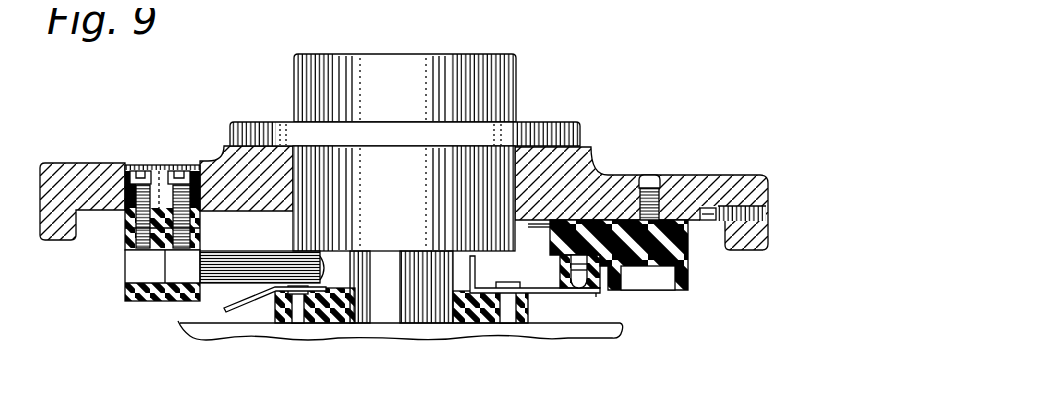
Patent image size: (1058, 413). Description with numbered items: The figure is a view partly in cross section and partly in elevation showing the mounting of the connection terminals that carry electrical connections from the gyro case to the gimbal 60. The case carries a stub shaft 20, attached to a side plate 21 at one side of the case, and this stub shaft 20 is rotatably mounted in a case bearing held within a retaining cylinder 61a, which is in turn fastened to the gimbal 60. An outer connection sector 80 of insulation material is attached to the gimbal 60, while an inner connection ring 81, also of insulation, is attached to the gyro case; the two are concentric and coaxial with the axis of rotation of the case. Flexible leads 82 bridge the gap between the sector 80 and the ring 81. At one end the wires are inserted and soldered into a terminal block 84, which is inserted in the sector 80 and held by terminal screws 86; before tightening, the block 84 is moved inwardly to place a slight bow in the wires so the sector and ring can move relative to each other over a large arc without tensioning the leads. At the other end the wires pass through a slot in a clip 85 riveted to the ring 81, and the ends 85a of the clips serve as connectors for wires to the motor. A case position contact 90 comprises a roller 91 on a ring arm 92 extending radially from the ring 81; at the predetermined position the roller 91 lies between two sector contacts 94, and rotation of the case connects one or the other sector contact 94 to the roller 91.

The retaining cylinder 61a is at (368, 75).
The gimbal 60 is at (683, 185).
The sector contacts 94 is at (590, 190).
The terminal screws 86 is at (160, 163).
The terminal block 84 is at (138, 257).
The flexible leads 82 is at (227, 260).
The ends of the clips 85a is at (233, 298).
The clip 85 is at (317, 310).
The stub shaft 20 is at (383, 283).
The inner connection ring 81 is at (462, 313).
The ring arm 92 is at (540, 285).
The side plate 21 is at (568, 315).
The case position contact 90 is at (543, 262).
The roller 91 is at (588, 272).
The outer connection sector 80 is at (682, 250).